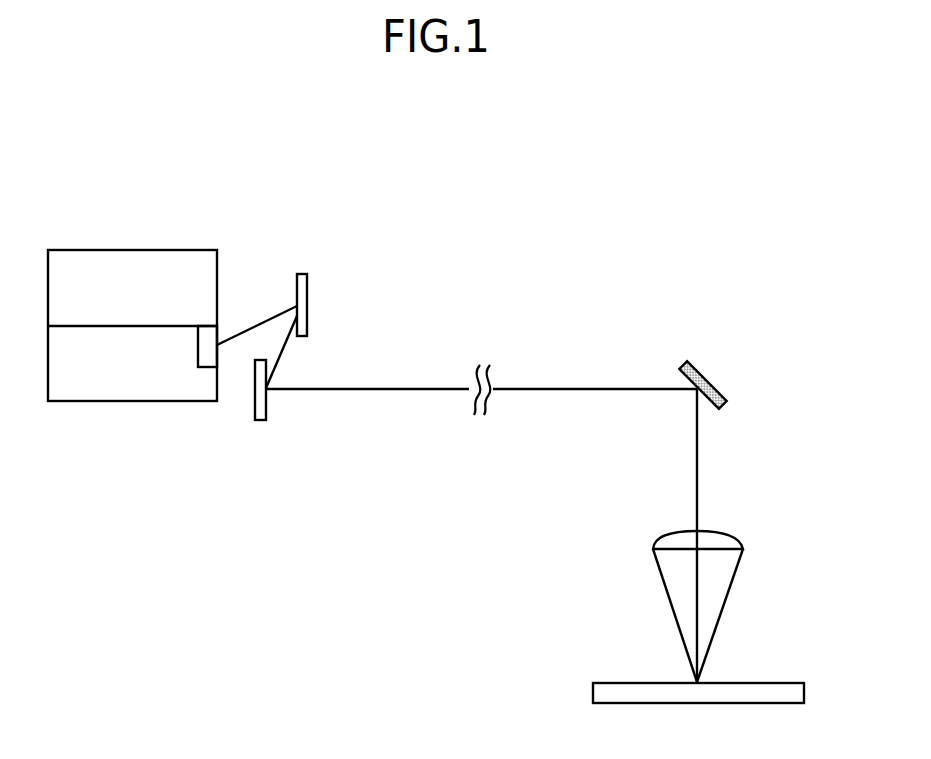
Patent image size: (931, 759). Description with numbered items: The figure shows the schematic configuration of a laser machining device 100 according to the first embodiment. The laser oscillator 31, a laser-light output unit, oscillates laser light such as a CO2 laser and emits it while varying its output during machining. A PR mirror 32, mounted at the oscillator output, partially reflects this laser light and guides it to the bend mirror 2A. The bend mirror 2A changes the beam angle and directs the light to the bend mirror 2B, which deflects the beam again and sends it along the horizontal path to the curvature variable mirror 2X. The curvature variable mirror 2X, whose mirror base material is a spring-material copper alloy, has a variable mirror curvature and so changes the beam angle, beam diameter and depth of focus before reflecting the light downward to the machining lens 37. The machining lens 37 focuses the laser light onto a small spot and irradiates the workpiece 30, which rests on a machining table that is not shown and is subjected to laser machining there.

The laser machining device 100 is at (618, 180).
The laser oscillator 31 is at (148, 262).
The PR mirror 32 is at (213, 338).
The bend mirror 2A is at (310, 282).
The bend mirror 2B is at (268, 420).
The curvature variable mirror 2X is at (720, 372).
The machining lens 37 is at (726, 531).
The workpiece 30 is at (783, 683).